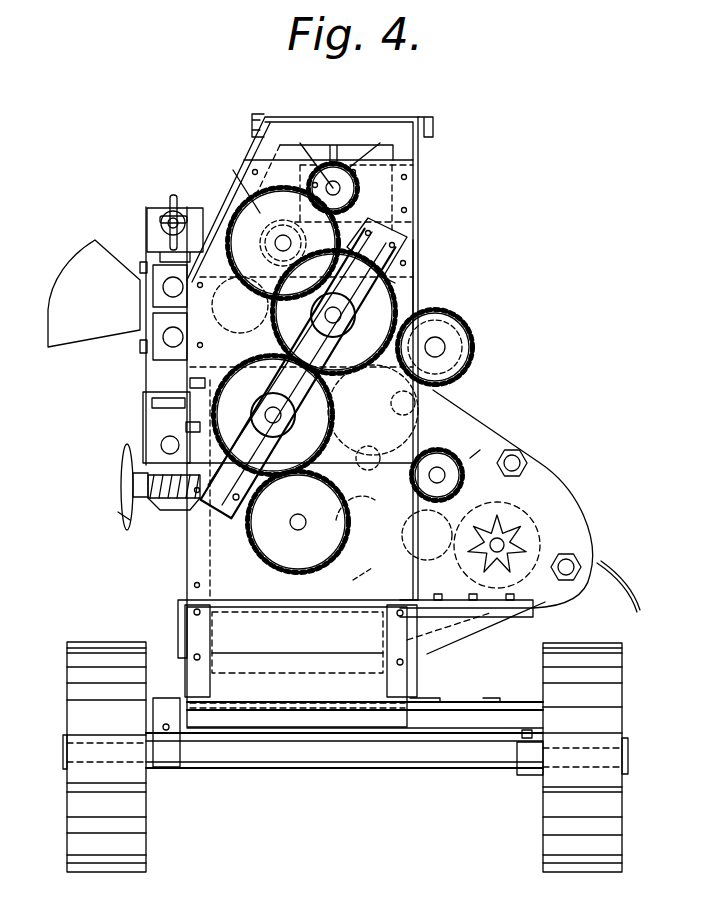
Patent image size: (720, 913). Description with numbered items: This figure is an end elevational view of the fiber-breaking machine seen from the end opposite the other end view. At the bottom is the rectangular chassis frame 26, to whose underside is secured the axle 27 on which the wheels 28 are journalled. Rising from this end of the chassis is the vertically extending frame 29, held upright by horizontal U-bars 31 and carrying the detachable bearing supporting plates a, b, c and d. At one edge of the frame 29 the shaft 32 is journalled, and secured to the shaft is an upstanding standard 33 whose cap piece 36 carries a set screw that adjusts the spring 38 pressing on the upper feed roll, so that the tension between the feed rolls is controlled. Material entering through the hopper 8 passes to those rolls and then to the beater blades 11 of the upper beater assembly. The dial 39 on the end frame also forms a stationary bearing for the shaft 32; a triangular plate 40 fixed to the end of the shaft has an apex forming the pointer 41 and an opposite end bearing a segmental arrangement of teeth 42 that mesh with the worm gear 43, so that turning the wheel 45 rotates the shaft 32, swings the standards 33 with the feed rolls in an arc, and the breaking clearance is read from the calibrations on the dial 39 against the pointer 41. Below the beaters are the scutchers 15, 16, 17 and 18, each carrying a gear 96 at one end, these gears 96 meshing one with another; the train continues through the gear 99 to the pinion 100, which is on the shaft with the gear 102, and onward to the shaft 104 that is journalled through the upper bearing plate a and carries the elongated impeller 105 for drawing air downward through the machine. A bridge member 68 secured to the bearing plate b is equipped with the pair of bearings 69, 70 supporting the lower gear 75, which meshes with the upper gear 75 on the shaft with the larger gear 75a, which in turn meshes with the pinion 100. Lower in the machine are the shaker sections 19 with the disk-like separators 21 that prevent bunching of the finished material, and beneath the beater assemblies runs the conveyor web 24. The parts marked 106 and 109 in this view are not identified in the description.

The hopper 8 is at (88, 262).
The beater blades 11 is at (182, 604).
The scutcher 15 is at (478, 407).
The scutcher 16 is at (484, 448).
The scutcher 17 is at (355, 526).
The scutcher 18 is at (351, 580).
The shaker sections 19 is at (545, 505).
The disk-like separators 21 is at (540, 530).
The conveyor web 24 is at (223, 630).
The chassis frame 26 is at (460, 730).
The axle 27 is at (373, 757).
The wheels 28 is at (133, 847).
The vertically extending frame 29 is at (408, 157).
The horizontal U-bars 31 is at (258, 123).
The shaft 32 is at (162, 438).
The upstanding standard 33 is at (155, 373).
The cap piece 36 is at (155, 245).
The spring 38 is at (150, 213).
The dial 39 is at (157, 392).
The triangular-shaped plate 40 is at (132, 467).
The pointer 41 is at (162, 415).
The segmental arrangement of teeth 42 is at (560, 457).
The worm gear 43 is at (167, 500).
The wheel 45 is at (130, 520).
The bridge member 68 is at (334, 312).
The bearing 69 is at (323, 316).
The bearing 70 is at (273, 415).
The gear 75 is at (400, 293).
The larger gear 75a is at (364, 374).
The gear 96 is at (435, 393).
The gear 99 is at (463, 322).
The pinion 100 is at (283, 231).
The gear 102 is at (231, 176).
The shaft 104 is at (307, 156).
The elongated impeller 105 is at (333, 188).
The gear 106 is at (280, 542).
The pawl 109 is at (376, 145).
The bearing supporting plate a is at (398, 197).
The bearing supporting plate b is at (407, 255).
The bearing supporting plate c is at (400, 305).
The bearing supporting plate d is at (315, 373).